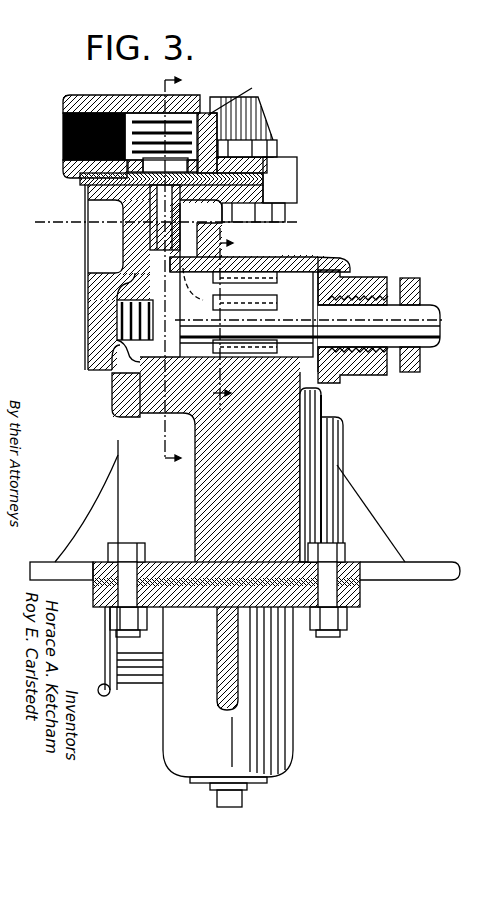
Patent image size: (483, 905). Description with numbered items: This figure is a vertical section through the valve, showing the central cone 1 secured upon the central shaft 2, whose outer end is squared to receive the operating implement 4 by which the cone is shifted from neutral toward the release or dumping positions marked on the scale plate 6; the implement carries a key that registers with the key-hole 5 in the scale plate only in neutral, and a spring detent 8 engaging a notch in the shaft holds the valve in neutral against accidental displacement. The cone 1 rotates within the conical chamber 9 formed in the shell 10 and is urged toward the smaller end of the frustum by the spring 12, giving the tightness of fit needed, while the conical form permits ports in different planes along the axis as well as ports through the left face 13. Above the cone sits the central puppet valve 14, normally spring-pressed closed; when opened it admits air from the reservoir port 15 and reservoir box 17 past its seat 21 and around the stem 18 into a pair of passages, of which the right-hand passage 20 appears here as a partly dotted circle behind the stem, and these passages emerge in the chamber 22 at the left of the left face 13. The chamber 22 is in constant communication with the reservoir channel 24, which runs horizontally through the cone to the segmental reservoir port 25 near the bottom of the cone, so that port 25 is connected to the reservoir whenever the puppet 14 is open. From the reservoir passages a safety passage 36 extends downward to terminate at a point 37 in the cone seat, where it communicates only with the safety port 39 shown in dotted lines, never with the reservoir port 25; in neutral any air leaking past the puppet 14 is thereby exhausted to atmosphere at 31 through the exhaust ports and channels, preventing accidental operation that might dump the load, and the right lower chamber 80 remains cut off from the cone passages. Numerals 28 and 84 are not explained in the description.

The central cone 1 is at (229, 314).
The central shaft 2 is at (310, 326).
The operating implement 4 is at (177, 273).
The key-hole 5 is at (166, 225).
The scale plate 6 is at (257, 375).
The spring detent 8 is at (218, 323).
The conical chamber 9 is at (272, 345).
The shell 10 is at (317, 387).
The spring 12 is at (107, 312).
The left face 13 is at (177, 363).
The central puppet valve 14 is at (157, 160).
The reservoir port 15 is at (63, 128).
The reservoir box 17 is at (200, 142).
The stem 18 is at (263, 187).
The right-hand passage 20 is at (157, 210).
The seat 21 is at (277, 157).
The chamber 22 is at (127, 370).
The reservoir channel 24 is at (183, 403).
The reservoir port of the cone 25 is at (320, 405).
The passage 28 is at (243, 93).
The atmosphere outlet 31 is at (245, 314).
The safety passage 36 is at (255, 262).
The terminating point 37 is at (312, 265).
The safety port 39 is at (194, 302).
The right lower chamber 80 is at (228, 707).
The bracket 84 is at (108, 695).